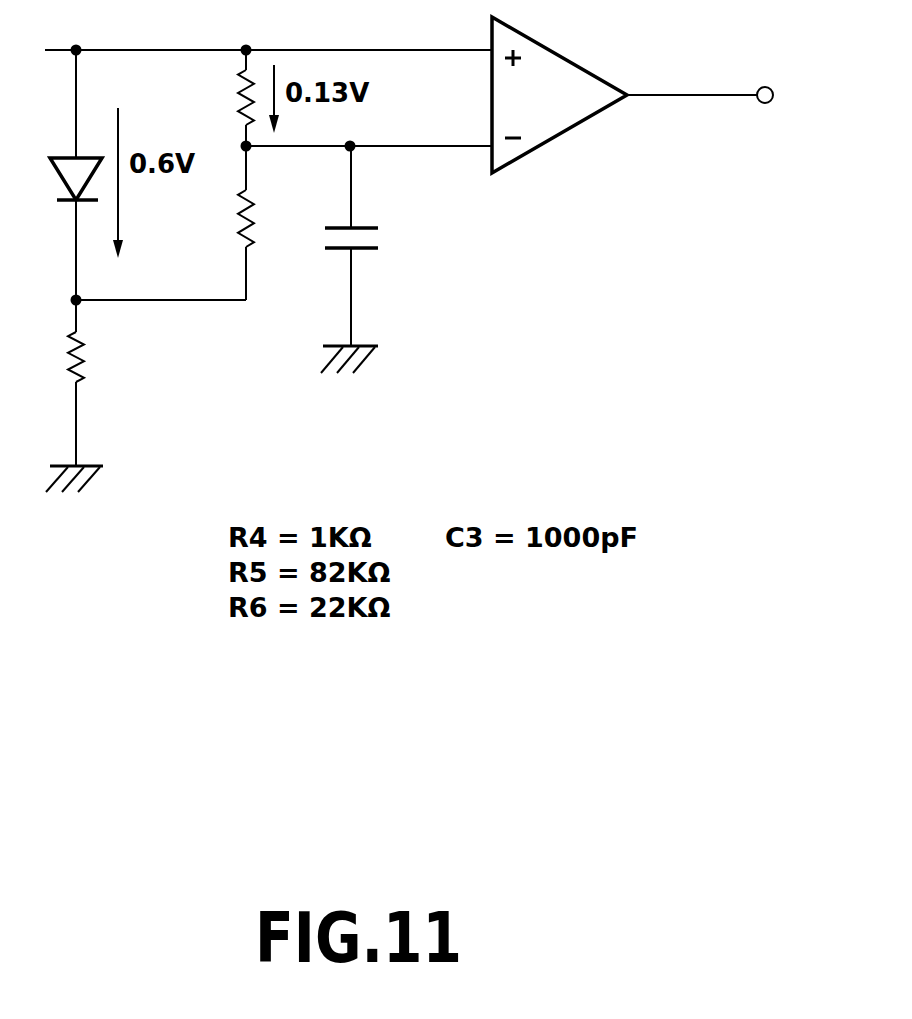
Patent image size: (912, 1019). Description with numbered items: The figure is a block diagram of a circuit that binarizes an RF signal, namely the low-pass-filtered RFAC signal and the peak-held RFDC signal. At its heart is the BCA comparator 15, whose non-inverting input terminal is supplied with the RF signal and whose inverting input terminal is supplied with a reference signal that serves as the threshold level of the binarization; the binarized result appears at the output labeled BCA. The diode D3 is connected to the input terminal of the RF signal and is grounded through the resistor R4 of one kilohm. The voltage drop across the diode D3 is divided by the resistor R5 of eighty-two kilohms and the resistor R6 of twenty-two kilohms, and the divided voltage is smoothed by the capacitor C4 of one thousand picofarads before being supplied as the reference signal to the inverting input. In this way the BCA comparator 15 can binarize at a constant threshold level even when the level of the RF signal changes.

The BCA comparator 15 is at (583, 125).
The resistor R4 is at (52, 357).
The resistor R5 is at (223, 218).
The resistor R6 is at (223, 97).
The diode D3 is at (55, 179).
The capacitor C4 is at (374, 241).
The output terminal BCA is at (800, 95).